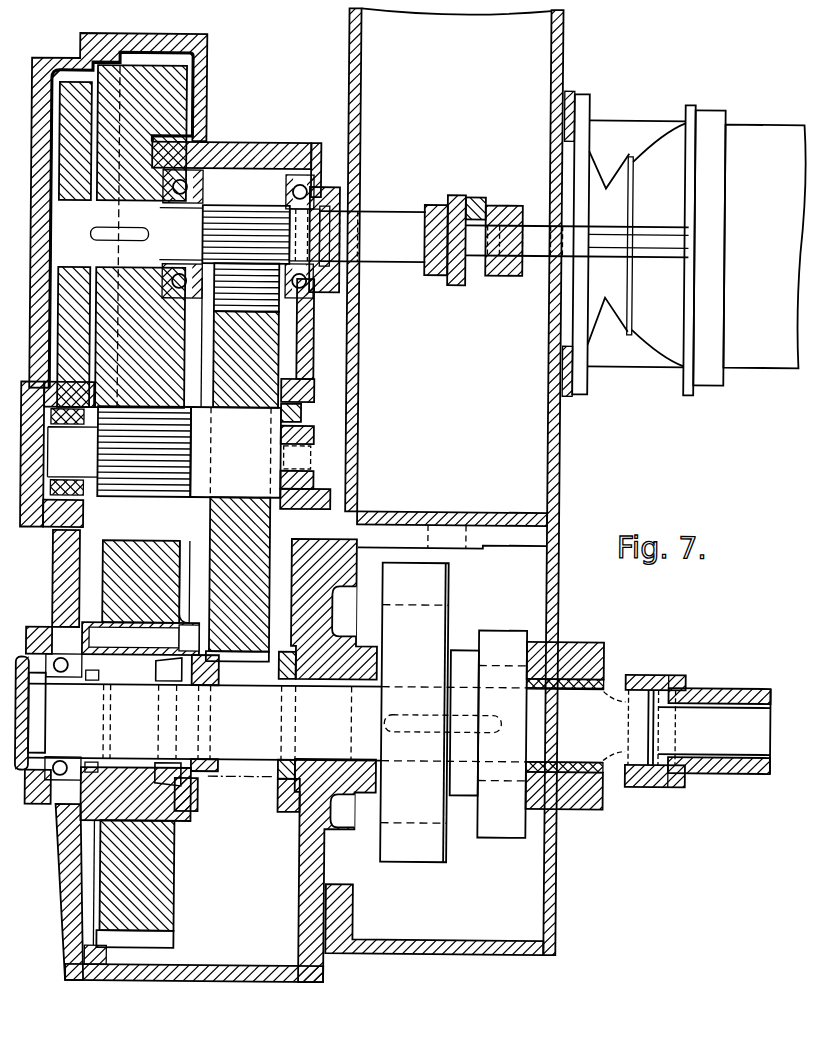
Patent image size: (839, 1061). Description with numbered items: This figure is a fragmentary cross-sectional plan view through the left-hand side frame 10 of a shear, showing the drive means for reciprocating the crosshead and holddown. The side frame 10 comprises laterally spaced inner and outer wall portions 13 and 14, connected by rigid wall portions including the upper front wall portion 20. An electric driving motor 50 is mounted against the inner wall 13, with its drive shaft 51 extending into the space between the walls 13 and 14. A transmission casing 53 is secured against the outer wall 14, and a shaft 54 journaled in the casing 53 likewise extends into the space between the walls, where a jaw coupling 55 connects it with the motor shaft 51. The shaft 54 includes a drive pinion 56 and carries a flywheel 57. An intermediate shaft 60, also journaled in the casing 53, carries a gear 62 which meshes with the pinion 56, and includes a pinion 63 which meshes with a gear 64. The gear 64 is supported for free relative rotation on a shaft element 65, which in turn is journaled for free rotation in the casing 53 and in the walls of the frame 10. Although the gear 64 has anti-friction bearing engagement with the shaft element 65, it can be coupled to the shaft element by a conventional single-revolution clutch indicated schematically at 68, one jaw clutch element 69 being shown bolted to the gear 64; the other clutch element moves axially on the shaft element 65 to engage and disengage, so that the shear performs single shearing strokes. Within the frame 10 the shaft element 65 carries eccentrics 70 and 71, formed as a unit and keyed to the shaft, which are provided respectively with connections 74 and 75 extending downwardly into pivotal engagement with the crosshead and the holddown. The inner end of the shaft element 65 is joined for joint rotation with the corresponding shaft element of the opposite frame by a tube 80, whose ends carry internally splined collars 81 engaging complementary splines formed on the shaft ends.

The left-hand side frame 10 is at (524, 964).
The inner wall portion 13 is at (559, 485).
The outer wall portion 14 is at (345, 40).
The upper front wall portion 20 is at (416, 955).
The electric driving motor 50 is at (752, 355).
The motor drive shaft 51 is at (527, 225).
The transmission casing 53 is at (208, 983).
The shaft 54 is at (374, 218).
The jaw coupling 55 is at (469, 205).
The drive pinion 56 is at (240, 213).
The flywheel 57 is at (139, 68).
The intermediate shaft 60 is at (258, 473).
The gear 62 is at (295, 352).
The pinion 63 is at (120, 490).
The gear 64 is at (165, 850).
The shaft element 65 is at (258, 736).
The single-revolution clutch 68 is at (263, 772).
The jaw clutch element 69 is at (196, 795).
The eccentric 70 is at (451, 608).
The eccentric 71 is at (507, 790).
The connection 74 is at (409, 862).
The connection 75 is at (482, 835).
The tube 80 is at (744, 773).
The internally splined collar 81 is at (648, 673).